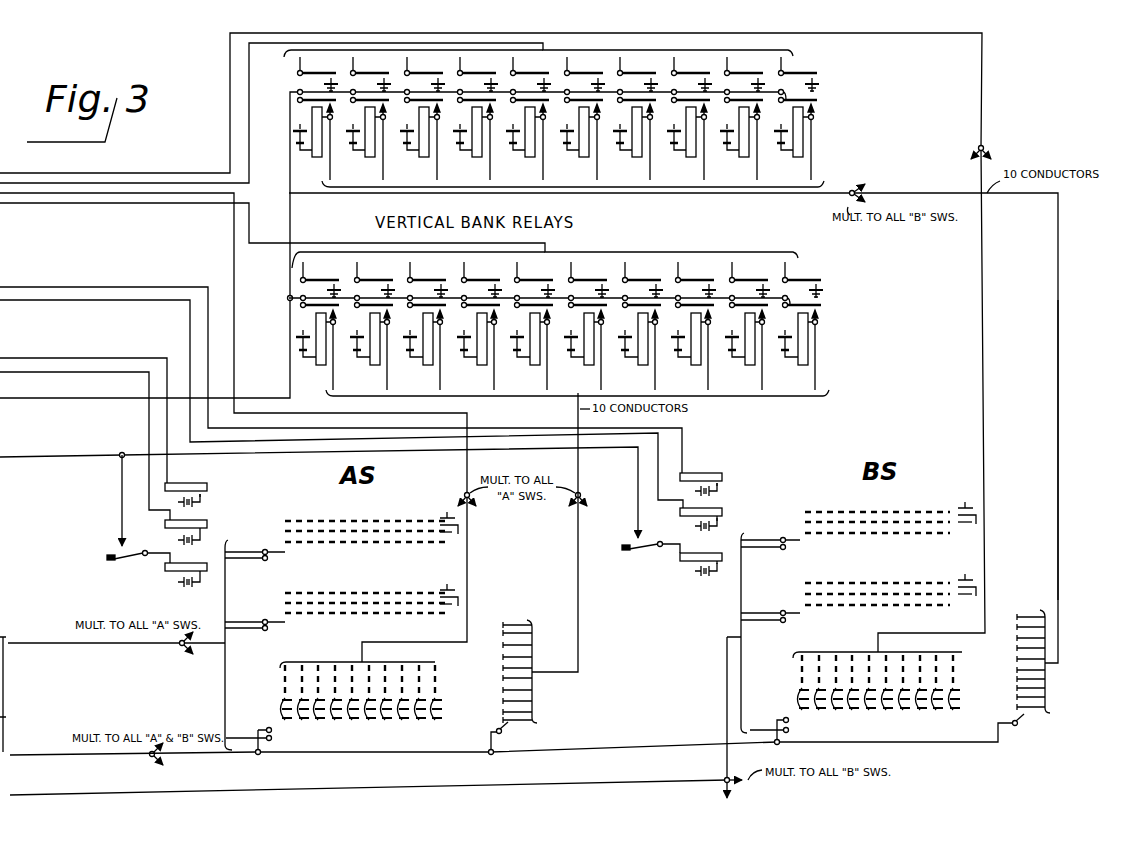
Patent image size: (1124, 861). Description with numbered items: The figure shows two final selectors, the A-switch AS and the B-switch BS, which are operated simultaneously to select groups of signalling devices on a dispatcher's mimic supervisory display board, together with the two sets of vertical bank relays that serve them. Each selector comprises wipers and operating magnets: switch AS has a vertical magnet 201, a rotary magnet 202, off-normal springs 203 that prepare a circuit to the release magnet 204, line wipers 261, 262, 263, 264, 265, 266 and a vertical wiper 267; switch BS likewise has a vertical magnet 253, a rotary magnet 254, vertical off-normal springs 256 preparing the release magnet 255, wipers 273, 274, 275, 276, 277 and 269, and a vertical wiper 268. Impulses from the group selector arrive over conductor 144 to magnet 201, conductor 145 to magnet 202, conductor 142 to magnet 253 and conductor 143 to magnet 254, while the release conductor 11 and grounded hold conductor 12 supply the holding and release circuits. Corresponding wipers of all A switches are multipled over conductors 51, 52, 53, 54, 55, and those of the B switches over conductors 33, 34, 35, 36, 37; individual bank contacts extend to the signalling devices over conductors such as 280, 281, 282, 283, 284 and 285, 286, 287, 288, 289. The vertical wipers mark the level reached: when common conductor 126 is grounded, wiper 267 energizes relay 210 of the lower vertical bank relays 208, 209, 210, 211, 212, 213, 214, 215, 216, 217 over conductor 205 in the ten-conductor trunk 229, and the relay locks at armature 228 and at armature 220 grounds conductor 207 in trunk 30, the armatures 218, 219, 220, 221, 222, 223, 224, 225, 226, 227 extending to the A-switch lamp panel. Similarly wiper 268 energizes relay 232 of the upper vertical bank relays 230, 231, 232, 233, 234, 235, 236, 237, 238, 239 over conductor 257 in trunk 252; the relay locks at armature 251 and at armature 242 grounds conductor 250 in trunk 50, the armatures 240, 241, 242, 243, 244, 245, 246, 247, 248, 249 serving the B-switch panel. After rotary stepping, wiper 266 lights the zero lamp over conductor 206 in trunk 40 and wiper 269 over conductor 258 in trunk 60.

The release conductor 11 is at (15, 455).
The hold conductor 12 is at (12, 400).
The ten-conductor trunk 30 is at (10, 200).
The ten-conductor trunk 40 is at (48, 200).
The ten-conductor trunk 50 is at (12, 172).
The ten-conductor trunk 60 is at (48, 172).
The conductor 33 is at (770, 533).
The conductor 34 is at (778, 550).
The conductor 35 is at (770, 606).
The conductor 36 is at (778, 624).
The conductor 37 is at (767, 725).
The conductor 51 is at (255, 544).
The conductor 52 is at (260, 562).
The conductor 53 is at (255, 614).
The conductor 54 is at (260, 633).
The conductor 55 is at (249, 736).
The common conductor 126 is at (12, 754).
The conductor 142 is at (15, 287).
The conductor 143 is at (15, 300).
The conductor 144 is at (15, 358).
The conductor 145 is at (15, 372).
The vertical magnet 201 is at (207, 487).
The rotary magnet 202 is at (207, 523).
The off-normal springs 203 is at (130, 552).
The release magnet 204 is at (178, 580).
The conductor 205 is at (533, 692).
The conductor 206 is at (437, 669).
The conductor 207 is at (405, 281).
The vertical bank relay 208 is at (317, 343).
The vertical bank relay 209 is at (371, 343).
The vertical bank relay 210 is at (424, 343).
The vertical bank relay 211 is at (478, 343).
The vertical bank relay 212 is at (531, 343).
The vertical bank relay 213 is at (585, 343).
The vertical bank relay 214 is at (639, 343).
The vertical bank relay 215 is at (692, 343).
The vertical bank relay 216 is at (746, 343).
The vertical bank relay 217 is at (799, 343).
The armature 218 is at (321, 280).
The armature 219 is at (375, 280).
The armature 220 is at (428, 280).
The armature 221 is at (482, 280).
The armature 222 is at (535, 280).
The armature 223 is at (589, 280).
The armature 224 is at (643, 280).
The armature 225 is at (696, 280).
The armature 226 is at (750, 280).
The armature 227 is at (803, 280).
The armature 228 is at (443, 307).
The ten-conductor trunk 229 is at (578, 540).
The vertical bank relay 230 is at (314, 136).
The vertical bank relay 231 is at (367, 136).
The vertical bank relay 232 is at (421, 136).
The vertical bank relay 233 is at (474, 135).
The vertical bank relay 234 is at (527, 136).
The vertical bank relay 235 is at (581, 136).
The vertical bank relay 236 is at (634, 136).
The vertical bank relay 237 is at (688, 136).
The vertical bank relay 238 is at (741, 136).
The vertical bank relay 239 is at (795, 136).
The armature 240 is at (318, 74).
The armature 241 is at (371, 74).
The armature 242 is at (425, 74).
The armature 243 is at (478, 74).
The armature 244 is at (531, 74).
The armature 245 is at (585, 74).
The armature 246 is at (638, 74).
The armature 247 is at (692, 74).
The armature 248 is at (745, 74).
The armature 249 is at (799, 74).
The conductor 250 is at (402, 74).
The armature 251 is at (440, 100).
The ten-conductor trunk 252 is at (1057, 445).
The vertical magnet 253 is at (725, 478).
The rotary magnet 254 is at (725, 511).
The release magnet 255 is at (696, 575).
The vertical off-normal springs 256 is at (647, 544).
The conductor 257 is at (1046, 690).
The conductor 258 is at (963, 656).
The wiper 261 is at (278, 537).
The wiper 262 is at (267, 561).
The wiper 263 is at (278, 608).
The wiper 264 is at (267, 631).
The wiper 265 is at (272, 740).
The wiper 266 is at (285, 716).
The vertical wiper 267 is at (504, 737).
The vertical wiper 268 is at (1020, 733).
The wiper 269 is at (795, 708).
The wiper 273 is at (797, 532).
The wiper 274 is at (785, 550).
The wiper 275 is at (797, 604).
The wiper 276 is at (785, 623).
The wiper 277 is at (790, 732).
The conductor 280 is at (456, 504).
The conductor 281 is at (453, 536).
The conductor 282 is at (456, 574).
The conductor 283 is at (453, 610).
The conductor 284 is at (443, 711).
The conductor 285 is at (976, 494).
The conductor 286 is at (973, 526).
The conductor 287 is at (976, 567).
The conductor 288 is at (973, 602).
The conductor 289 is at (965, 702).